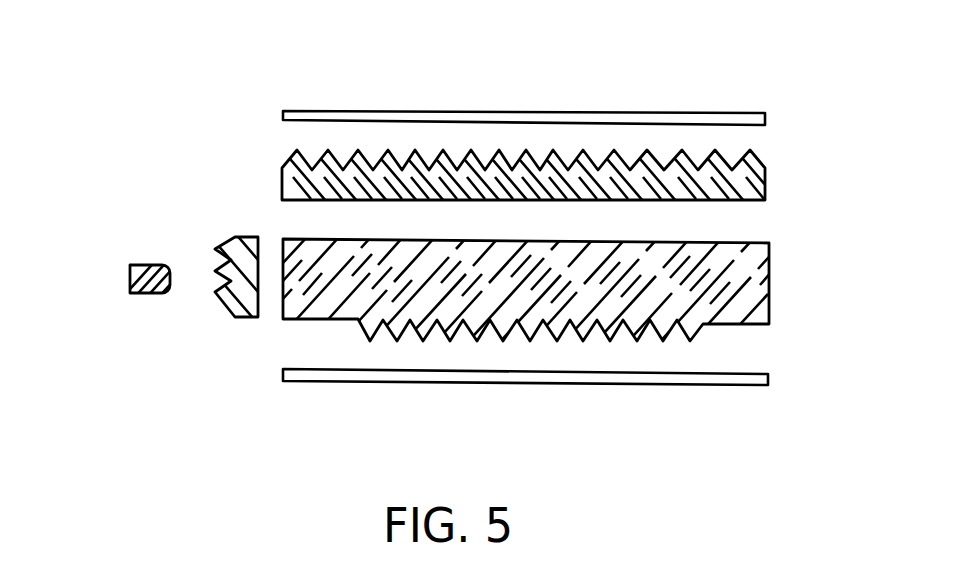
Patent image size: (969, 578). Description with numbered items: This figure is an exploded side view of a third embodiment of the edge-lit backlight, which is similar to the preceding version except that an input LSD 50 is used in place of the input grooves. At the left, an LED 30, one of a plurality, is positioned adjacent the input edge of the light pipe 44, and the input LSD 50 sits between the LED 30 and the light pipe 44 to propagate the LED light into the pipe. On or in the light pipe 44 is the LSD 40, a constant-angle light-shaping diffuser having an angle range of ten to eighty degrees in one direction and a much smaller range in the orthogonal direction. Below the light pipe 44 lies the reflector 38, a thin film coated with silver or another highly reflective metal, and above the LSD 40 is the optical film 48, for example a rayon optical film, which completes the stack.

The LED 30 is at (145, 265).
The reflector 38 is at (303, 383).
The LSD 40 is at (767, 183).
The light pipe 44 is at (773, 281).
The optical film 48 is at (475, 111).
The input LSD 50 is at (253, 238).